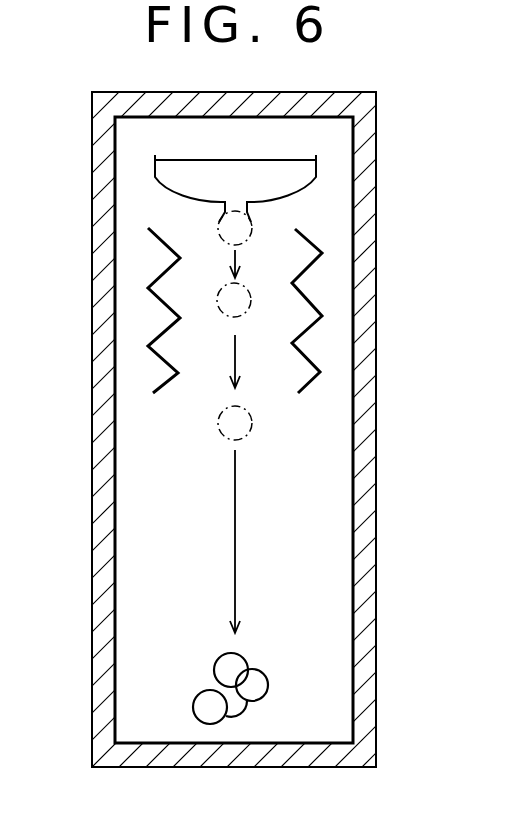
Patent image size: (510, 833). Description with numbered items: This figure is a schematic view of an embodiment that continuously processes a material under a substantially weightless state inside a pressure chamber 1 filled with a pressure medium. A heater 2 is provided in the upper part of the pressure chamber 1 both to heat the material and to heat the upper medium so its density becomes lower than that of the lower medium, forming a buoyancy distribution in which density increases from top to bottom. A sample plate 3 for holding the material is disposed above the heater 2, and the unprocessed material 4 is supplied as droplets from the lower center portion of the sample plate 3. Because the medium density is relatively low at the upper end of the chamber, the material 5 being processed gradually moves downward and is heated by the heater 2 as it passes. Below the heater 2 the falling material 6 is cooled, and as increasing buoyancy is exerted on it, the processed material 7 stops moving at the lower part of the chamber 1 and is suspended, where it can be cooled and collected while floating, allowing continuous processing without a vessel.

The pressure chamber 1 is at (97, 176).
The heater 2 is at (163, 247).
The sample plate 3 is at (318, 162).
The material 4 is at (248, 223).
The material 5 is at (243, 300).
The falling material 6 is at (237, 421).
The material 7 is at (255, 686).